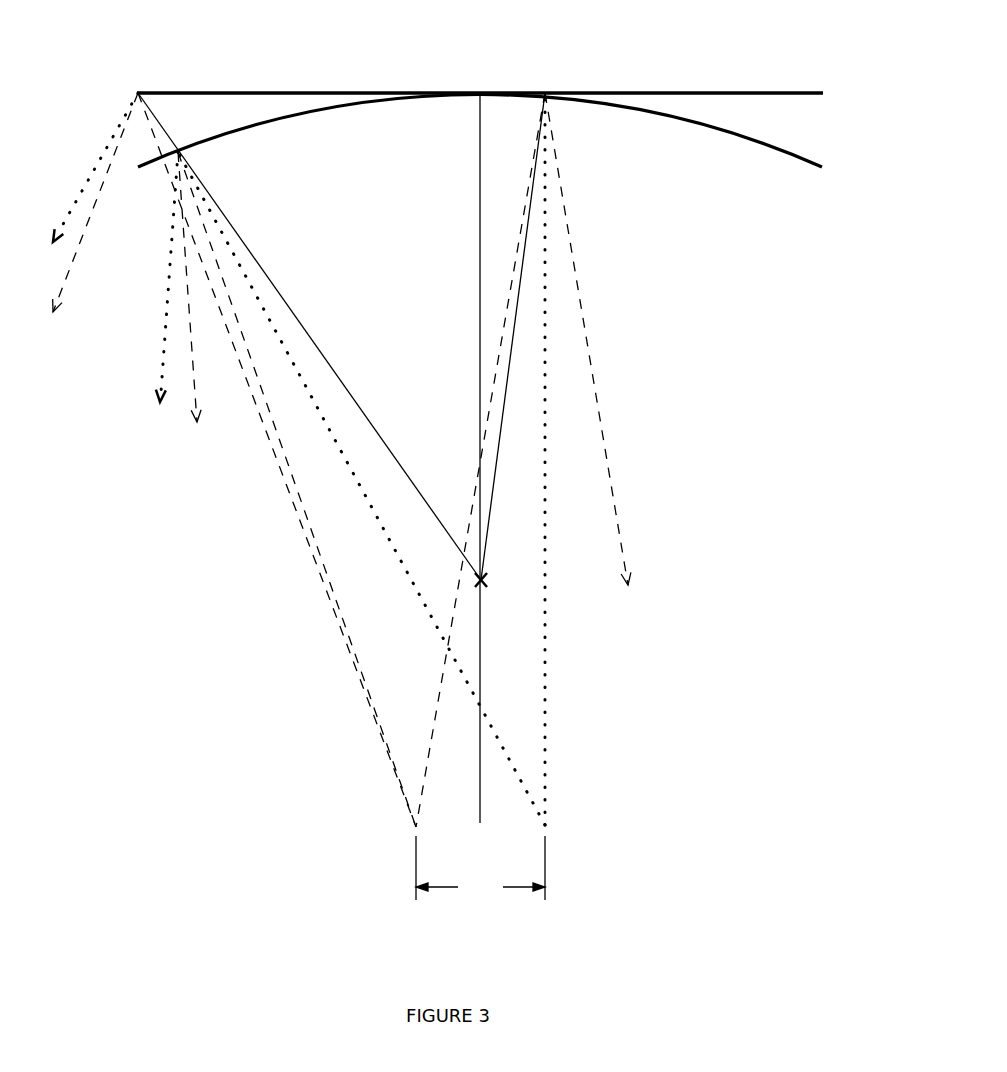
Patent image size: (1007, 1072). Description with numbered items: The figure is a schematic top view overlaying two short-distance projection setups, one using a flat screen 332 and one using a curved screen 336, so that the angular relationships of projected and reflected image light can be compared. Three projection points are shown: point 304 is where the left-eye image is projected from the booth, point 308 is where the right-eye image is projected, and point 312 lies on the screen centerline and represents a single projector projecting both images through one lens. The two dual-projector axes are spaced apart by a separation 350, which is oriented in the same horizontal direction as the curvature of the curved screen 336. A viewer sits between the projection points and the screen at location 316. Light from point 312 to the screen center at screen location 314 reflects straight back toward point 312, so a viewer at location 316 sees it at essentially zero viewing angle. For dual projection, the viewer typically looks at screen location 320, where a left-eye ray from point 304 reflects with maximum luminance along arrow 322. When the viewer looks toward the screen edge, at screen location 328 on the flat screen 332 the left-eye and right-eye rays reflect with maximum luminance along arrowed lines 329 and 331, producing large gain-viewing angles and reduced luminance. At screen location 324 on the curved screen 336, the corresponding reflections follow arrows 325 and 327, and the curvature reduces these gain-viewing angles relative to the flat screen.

The projection point 304 is at (460, 464).
The projection point 308 is at (381, 464).
The projection point 312 is at (480, 471).
The screen location 314 is at (480, 72).
The viewer location 316 is at (341, 342).
The screen location 320 is at (545, 72).
The arrow 322 is at (603, 358).
The screen location 324 is at (183, 118).
The arrow 325 is at (196, 305).
The arrow 327 is at (163, 293).
The screen location 328 is at (130, 82).
The arrowed line 329 is at (95, 217).
The arrowed line 331 is at (85, 183).
The flat screen 332 is at (483, 111).
The curved screen 336 is at (483, 148).
The separation 350 is at (480, 868).